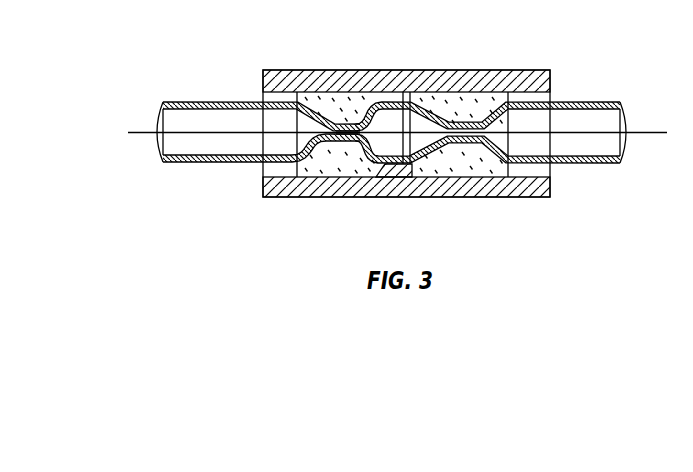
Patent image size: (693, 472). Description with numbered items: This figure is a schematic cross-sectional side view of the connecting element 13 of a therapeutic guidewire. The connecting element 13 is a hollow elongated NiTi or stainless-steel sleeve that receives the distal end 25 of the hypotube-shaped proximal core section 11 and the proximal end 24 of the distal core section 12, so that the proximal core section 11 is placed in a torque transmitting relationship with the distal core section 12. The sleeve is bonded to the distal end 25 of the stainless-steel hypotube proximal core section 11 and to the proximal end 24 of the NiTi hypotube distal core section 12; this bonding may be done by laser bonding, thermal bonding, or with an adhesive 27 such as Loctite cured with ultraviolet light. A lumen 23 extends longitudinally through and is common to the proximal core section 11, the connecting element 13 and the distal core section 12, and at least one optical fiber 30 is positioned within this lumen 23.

The proximal core section 11 is at (261, 108).
The distal core section 12 is at (487, 111).
The connecting element 13 is at (389, 116).
The lumen 23 is at (393, 99).
The proximal end of the distal core section 24 is at (475, 105).
The distal end of the proximal core section 25 is at (368, 84).
The adhesive 27 is at (331, 104).
The optical fiber 30 is at (410, 154).